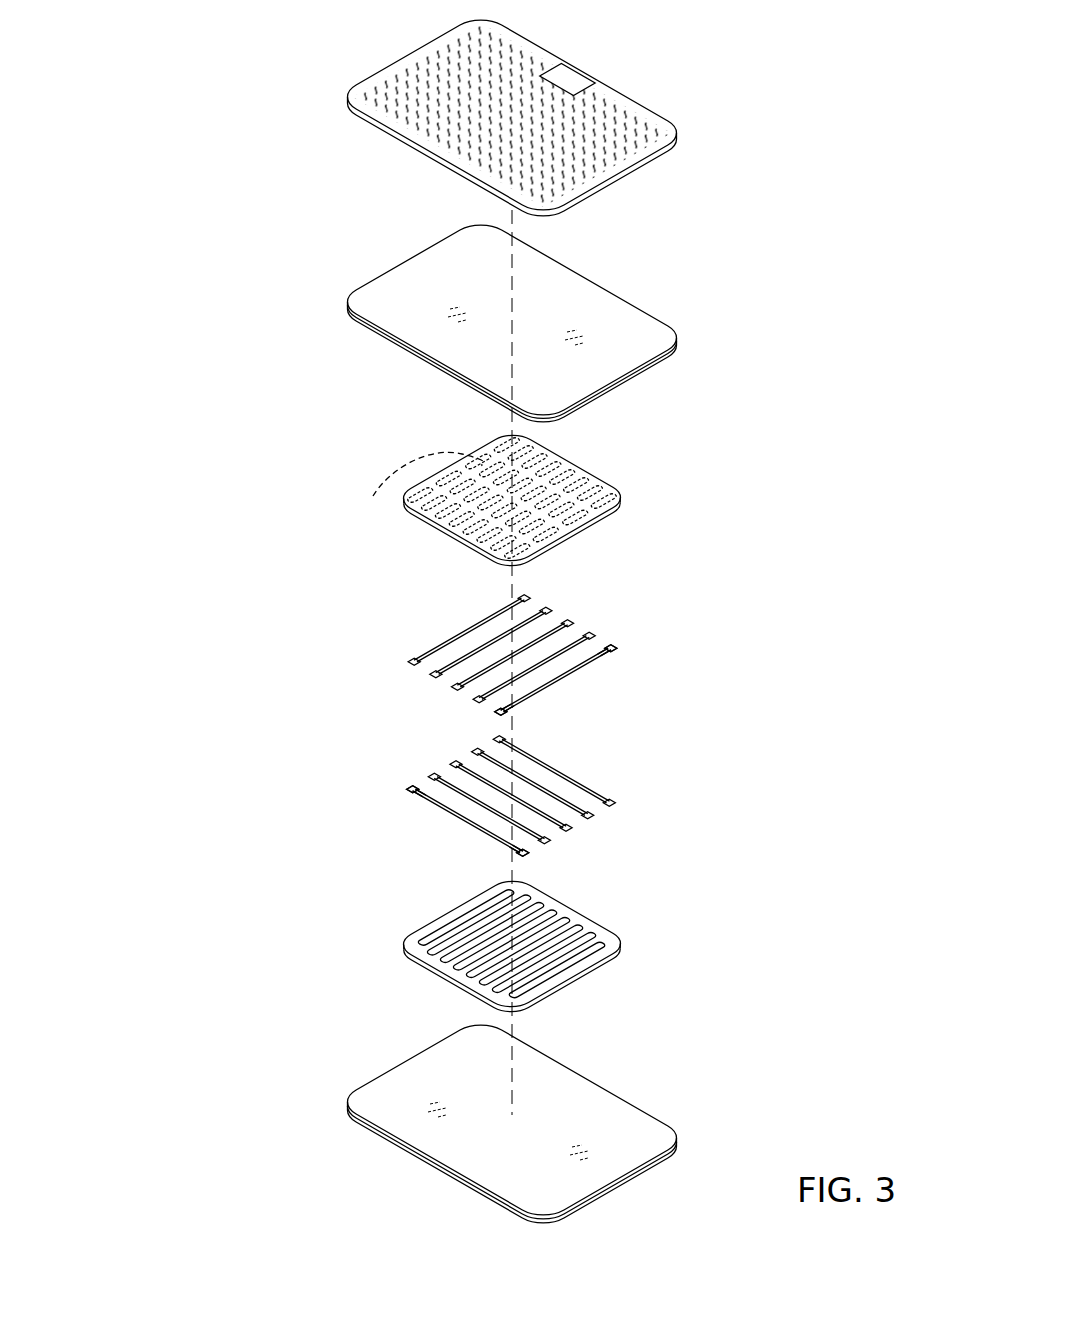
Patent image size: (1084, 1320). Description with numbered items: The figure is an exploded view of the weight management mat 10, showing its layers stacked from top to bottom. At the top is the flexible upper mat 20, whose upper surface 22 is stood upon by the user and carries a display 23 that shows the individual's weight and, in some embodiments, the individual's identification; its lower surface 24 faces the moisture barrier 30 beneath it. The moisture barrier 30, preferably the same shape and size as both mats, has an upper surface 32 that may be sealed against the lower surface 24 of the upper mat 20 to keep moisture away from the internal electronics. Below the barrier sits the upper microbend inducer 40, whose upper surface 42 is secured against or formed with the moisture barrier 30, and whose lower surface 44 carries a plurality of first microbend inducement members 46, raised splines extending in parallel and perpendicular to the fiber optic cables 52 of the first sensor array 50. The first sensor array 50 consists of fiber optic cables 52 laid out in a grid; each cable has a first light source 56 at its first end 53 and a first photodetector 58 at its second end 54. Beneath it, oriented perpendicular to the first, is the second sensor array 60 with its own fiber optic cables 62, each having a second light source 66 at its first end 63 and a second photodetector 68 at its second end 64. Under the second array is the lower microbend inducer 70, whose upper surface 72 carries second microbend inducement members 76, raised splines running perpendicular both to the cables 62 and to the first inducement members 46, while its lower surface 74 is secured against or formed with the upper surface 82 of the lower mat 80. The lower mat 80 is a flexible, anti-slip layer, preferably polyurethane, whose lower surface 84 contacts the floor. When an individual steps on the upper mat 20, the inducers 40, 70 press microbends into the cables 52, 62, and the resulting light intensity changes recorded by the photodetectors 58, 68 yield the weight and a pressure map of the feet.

The weight management mat 10 is at (184, 148).
The upper mat 20 is at (628, 97).
The upper surface 22 is at (400, 76).
The display 23 is at (577, 73).
The lower surface 24 is at (376, 130).
The moisture barrier 30 is at (642, 303).
The upper surface 32 is at (385, 300).
The upper microbend inducer 40 is at (620, 516).
The upper surface 42 is at (576, 468).
The lower surface 44 is at (580, 532).
The first microbend inducement members 46 is at (375, 495).
The first sensor array 50 is at (636, 665).
The fiber optic cables 52 is at (556, 680).
The first ends 53 is at (507, 708).
The second ends 54 is at (611, 648).
The first light sources 56 is at (501, 711).
The first photodetectors 58 is at (604, 652).
The second sensor array 60 is at (655, 832).
The fiber optic cables 62 is at (511, 796).
The first end 63 is at (523, 852).
The second ends 64 is at (419, 793).
The second light sources 66 is at (516, 849).
The second photodetectors 68 is at (413, 789).
The lower microbend inducer 70 is at (621, 943).
The upper surface 72 is at (573, 918).
The lower surface 74 is at (436, 971).
The second microbend inducement members 76 is at (540, 940).
The lower mat 80 is at (348, 1090).
The upper surface 82 is at (398, 1085).
The lower surface 84 is at (380, 1138).